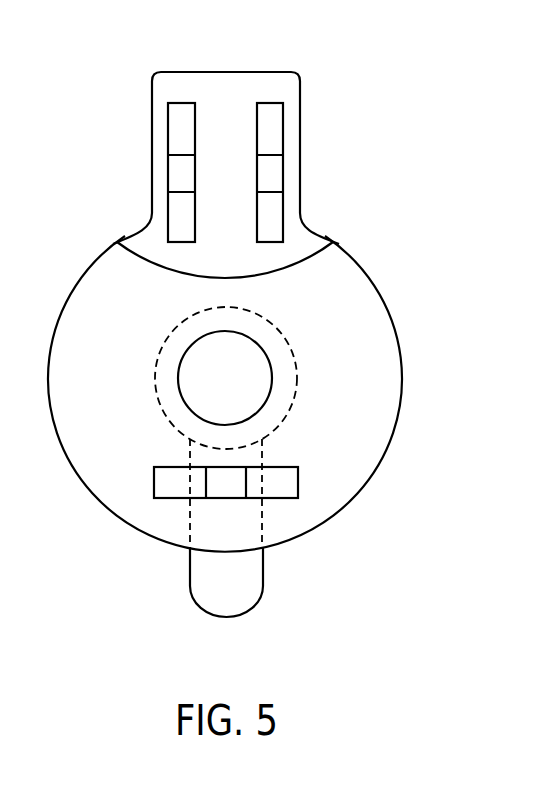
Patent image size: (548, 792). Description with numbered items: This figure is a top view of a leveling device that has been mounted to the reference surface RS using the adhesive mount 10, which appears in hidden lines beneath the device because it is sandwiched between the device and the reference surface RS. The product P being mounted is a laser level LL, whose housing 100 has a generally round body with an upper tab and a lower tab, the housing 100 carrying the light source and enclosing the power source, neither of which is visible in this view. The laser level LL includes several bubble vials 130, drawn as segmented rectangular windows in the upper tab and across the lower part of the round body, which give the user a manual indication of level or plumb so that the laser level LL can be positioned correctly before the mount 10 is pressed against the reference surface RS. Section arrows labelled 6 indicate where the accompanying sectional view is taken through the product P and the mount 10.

The section line for FIG. 6 is at (225, 57).
The mount 10 is at (168, 337).
The housing 100 is at (78, 455).
The bubble vial 130 is at (177, 135).
The reference surface RS is at (365, 213).
The laser level LL is at (377, 385).
The product P is at (402, 505).